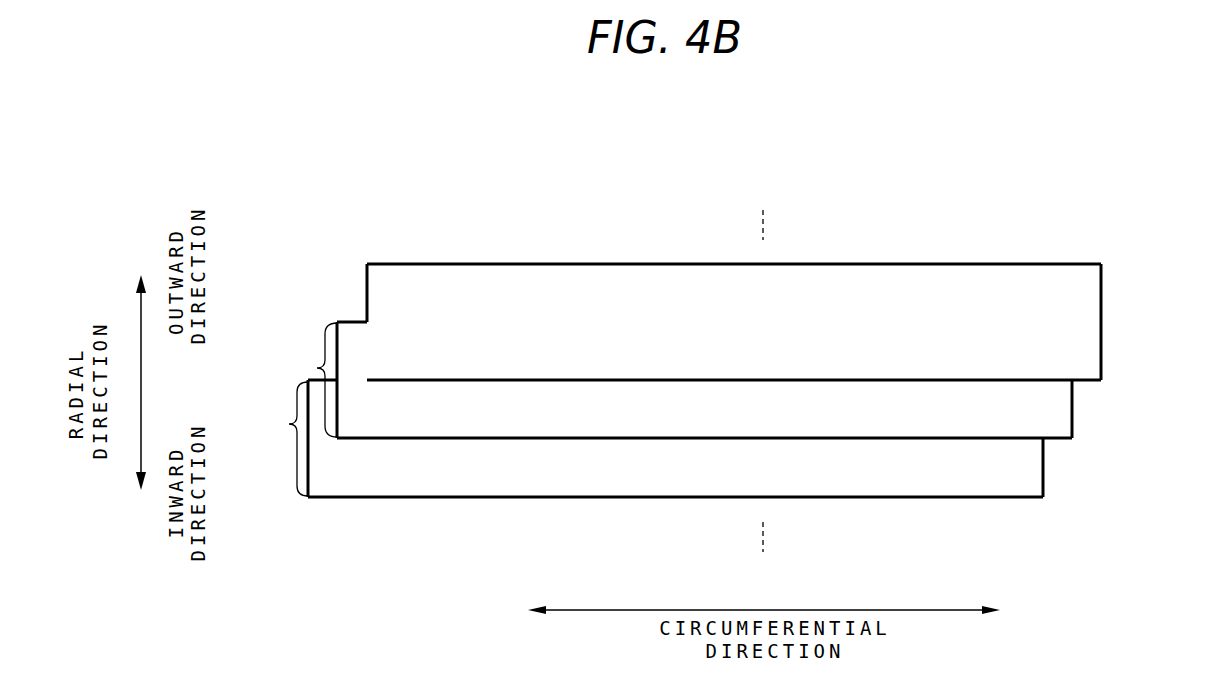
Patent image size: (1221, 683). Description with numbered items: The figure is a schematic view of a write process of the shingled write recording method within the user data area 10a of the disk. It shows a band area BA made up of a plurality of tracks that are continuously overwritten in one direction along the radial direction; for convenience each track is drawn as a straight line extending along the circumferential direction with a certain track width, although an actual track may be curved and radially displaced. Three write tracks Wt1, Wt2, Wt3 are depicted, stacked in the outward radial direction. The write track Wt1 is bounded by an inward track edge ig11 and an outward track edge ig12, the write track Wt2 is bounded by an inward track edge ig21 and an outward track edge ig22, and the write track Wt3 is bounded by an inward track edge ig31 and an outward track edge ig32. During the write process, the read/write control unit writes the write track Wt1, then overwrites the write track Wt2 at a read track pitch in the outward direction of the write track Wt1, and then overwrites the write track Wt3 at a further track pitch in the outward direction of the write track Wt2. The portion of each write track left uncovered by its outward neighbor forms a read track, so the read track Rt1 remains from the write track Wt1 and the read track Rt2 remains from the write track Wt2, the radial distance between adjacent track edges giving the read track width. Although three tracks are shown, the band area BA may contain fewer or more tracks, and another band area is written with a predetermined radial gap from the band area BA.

The user data area 10a is at (1011, 137).
The band area BA is at (1129, 217).
The track edge ig11 is at (532, 497).
The track edge ig12 is at (316, 378).
The track edge ig21 is at (556, 423).
The track edge ig22 is at (337, 322).
The track edge ig31 is at (532, 380).
The track edge ig32 is at (556, 248).
The write track Wt1 is at (289, 425).
The write track Wt2 is at (316, 367).
The write track Wt3 is at (1155, 322).
The read track Rt1 is at (1037, 466).
The read track Rt2 is at (1065, 406).